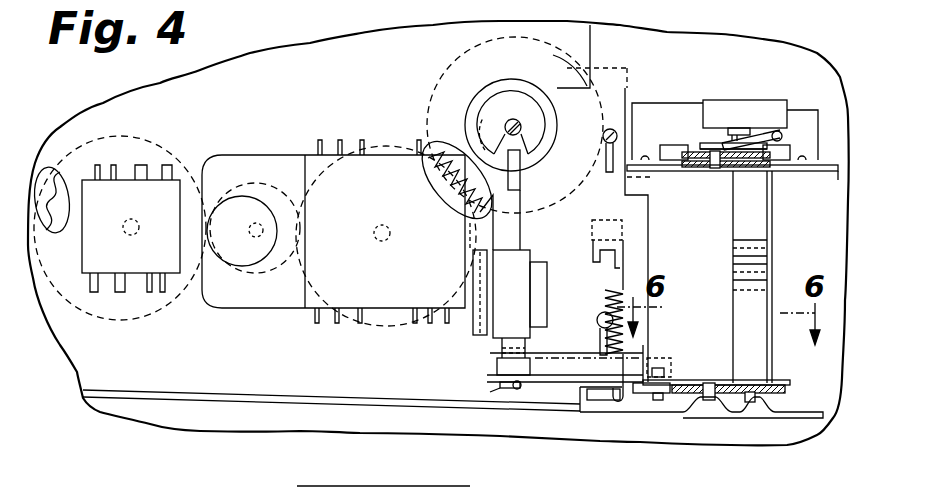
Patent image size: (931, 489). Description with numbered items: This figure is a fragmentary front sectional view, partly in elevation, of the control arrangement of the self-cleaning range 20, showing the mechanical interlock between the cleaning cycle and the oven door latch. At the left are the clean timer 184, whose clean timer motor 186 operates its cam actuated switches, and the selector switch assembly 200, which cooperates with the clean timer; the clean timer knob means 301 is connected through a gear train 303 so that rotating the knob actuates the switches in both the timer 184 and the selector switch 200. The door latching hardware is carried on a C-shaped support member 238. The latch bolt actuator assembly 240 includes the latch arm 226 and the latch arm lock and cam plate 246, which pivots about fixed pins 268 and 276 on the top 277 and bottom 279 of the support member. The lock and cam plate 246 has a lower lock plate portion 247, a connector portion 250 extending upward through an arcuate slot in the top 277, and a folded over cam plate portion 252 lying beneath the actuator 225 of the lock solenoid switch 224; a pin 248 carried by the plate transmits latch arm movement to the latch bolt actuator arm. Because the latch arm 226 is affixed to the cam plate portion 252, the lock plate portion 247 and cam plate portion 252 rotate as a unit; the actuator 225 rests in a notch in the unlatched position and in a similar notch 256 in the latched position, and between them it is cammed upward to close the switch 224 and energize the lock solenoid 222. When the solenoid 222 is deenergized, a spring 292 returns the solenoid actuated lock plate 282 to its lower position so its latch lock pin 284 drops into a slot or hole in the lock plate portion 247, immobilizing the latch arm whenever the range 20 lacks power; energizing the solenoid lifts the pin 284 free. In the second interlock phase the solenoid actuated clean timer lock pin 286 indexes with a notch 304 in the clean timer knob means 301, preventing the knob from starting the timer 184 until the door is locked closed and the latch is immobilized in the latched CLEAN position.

The range 20 is at (102, 412).
The clean timer 184 is at (284, 155).
The clean timer motor 186 is at (270, 250).
The selector switch assembly 200 is at (182, 188).
The lock solenoid 222 is at (498, 334).
The lock solenoid switch 224 is at (740, 105).
The actuator of the lock solenoid switch 225 is at (758, 141).
The latch arm 226 is at (689, 143).
The C-shaped support member 238 is at (636, 414).
The latch bolt actuator assembly 240 is at (784, 390).
The latch arm lock and cam plate 246 is at (788, 392).
The lock plate portion 247 is at (695, 382).
The pin 248 is at (752, 403).
The connector portion 250 is at (757, 236).
The cam plate portion 252 is at (665, 145).
The notch 256 is at (781, 142).
The fixed pin 268 is at (713, 167).
The fixed pin 276 is at (703, 413).
The top of the support member 277 is at (832, 178).
The bottom of the support member 279 is at (656, 414).
The solenoid actuated lock plate 282 is at (553, 55).
The latch lock pin 284 is at (661, 374).
The clean timer lock pin 286 is at (482, 118).
The spring 292 is at (620, 292).
The clean timer knob means 301 is at (532, 142).
The gear train 303 is at (427, 128).
The notch 304 is at (505, 128).